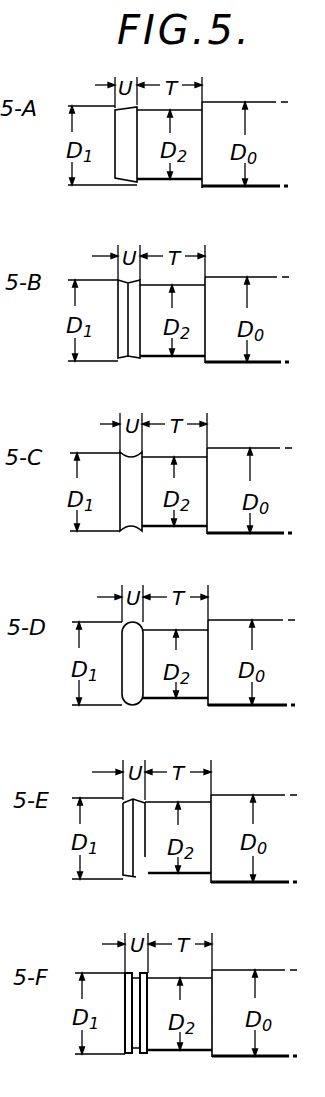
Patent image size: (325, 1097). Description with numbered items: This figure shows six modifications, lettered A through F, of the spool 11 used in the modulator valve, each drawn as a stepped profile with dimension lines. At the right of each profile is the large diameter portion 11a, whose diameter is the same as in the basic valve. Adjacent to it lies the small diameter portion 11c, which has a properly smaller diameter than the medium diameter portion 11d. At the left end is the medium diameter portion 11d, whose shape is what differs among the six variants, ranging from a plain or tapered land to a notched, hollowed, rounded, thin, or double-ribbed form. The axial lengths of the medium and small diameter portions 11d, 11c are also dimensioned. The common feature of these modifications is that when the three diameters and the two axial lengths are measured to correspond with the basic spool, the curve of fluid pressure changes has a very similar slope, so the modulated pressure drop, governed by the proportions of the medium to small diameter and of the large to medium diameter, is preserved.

The spool 11 is at (264, 118).
The large diameter portion 11a is at (230, 176).
The small diameter portion 11c is at (190, 173).
The medium diameter portion 11d is at (133, 174).